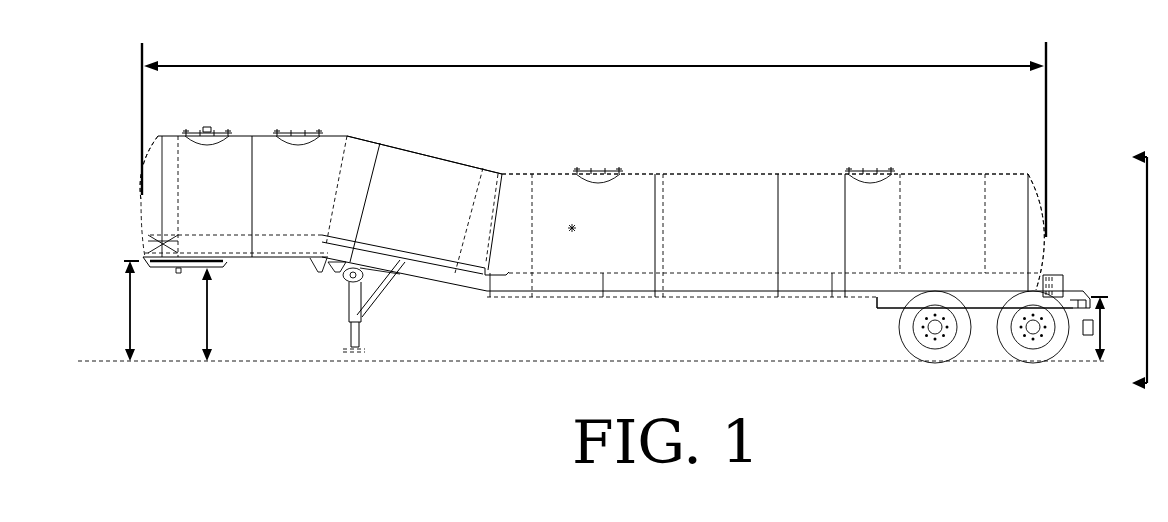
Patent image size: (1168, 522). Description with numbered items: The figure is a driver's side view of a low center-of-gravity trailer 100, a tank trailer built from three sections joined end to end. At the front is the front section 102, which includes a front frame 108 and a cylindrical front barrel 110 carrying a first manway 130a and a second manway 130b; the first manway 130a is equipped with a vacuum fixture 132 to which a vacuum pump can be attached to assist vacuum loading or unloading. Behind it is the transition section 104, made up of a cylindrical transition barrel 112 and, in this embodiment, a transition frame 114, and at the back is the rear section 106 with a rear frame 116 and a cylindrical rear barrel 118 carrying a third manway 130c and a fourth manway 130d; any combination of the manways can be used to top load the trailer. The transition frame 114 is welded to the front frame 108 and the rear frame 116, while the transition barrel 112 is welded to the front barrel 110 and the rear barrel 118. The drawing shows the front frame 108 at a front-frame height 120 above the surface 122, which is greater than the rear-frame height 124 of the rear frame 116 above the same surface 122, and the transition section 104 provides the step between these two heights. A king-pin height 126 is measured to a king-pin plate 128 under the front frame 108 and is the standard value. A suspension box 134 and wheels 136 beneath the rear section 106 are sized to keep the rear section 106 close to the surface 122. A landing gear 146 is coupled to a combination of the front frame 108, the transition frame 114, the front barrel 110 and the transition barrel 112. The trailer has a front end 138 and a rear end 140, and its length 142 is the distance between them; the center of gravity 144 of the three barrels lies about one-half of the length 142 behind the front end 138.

The low center-of-gravity trailer 100 is at (1088, 98).
The front section 102 is at (260, 137).
The transition section 104 is at (415, 155).
The rear section 106 is at (705, 174).
The front frame 108 is at (272, 262).
The front barrel 110 is at (246, 196).
The transition barrel 112 is at (426, 208).
The transition frame 114 is at (463, 292).
The rear frame 116 is at (748, 300).
The rear barrel 118 is at (780, 235).
The front-frame height 120 is at (115, 311).
The surface 122 is at (640, 361).
The rear-frame height 124 is at (1115, 329).
The king-pin height 126 is at (188, 314).
The king-pin plate 128 is at (223, 268).
The first manway 130a is at (223, 133).
The second manway 130b is at (310, 133).
The third manway 130c is at (598, 171).
The fourth manway 130d is at (870, 171).
The vacuum fixture 132 is at (203, 130).
The suspension box 134 is at (893, 310).
The wheels 136 is at (1006, 350).
The front end 138 is at (142, 195).
The rear end 140 is at (1047, 236).
The length 142 is at (682, 66).
The center of gravity 144 is at (573, 225).
The landing gear 146 is at (361, 328).